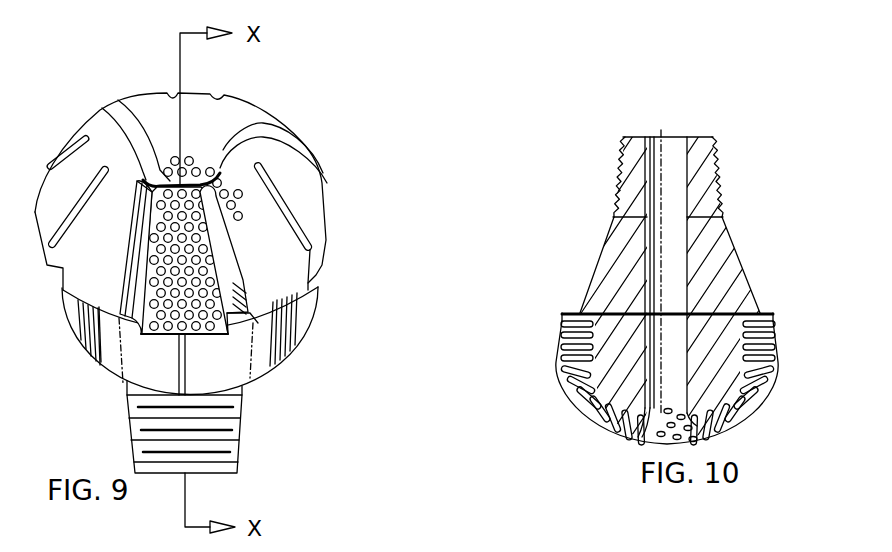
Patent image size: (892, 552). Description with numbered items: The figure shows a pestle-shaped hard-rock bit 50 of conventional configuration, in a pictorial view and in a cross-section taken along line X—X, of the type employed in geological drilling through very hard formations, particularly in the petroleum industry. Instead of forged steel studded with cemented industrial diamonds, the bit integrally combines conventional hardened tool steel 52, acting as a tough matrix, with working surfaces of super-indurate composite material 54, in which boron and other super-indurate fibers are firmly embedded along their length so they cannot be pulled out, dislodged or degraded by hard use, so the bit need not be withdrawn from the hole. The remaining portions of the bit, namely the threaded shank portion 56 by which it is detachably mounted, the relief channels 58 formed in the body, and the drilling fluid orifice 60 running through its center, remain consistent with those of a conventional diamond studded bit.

In FIG. 9, the hard-rock bit 50 is at (303, 98).
In FIG. 10, the hard-rock bit 50 is at (768, 285).
In FIG. 10, the hardened tool steel 52 is at (723, 242).
In FIG. 9, the super-indurate composite material 54 is at (247, 225).
In FIG. 10, the super-indurate composite material 54 is at (556, 370).
In FIG. 9, the threaded shank portion 56 is at (244, 424).
In FIG. 10, the threaded shank portion 56 is at (725, 177).
In FIG. 9, the relief channels 58 is at (235, 270).
In FIG. 9, the drilling fluid orifice 60 is at (207, 156).
In FIG. 10, the drilling fluid orifice 60 is at (665, 143).